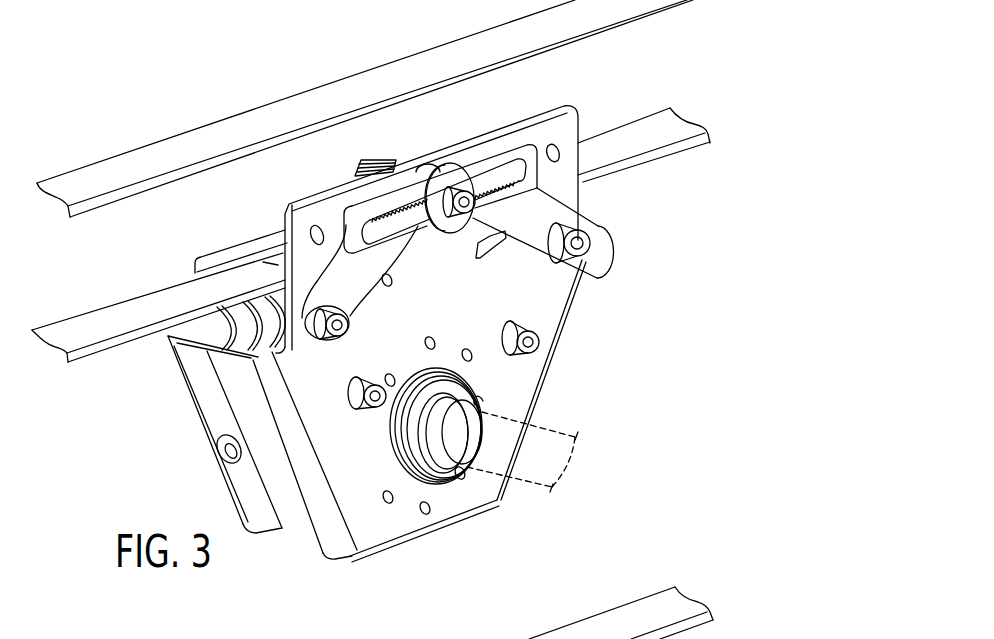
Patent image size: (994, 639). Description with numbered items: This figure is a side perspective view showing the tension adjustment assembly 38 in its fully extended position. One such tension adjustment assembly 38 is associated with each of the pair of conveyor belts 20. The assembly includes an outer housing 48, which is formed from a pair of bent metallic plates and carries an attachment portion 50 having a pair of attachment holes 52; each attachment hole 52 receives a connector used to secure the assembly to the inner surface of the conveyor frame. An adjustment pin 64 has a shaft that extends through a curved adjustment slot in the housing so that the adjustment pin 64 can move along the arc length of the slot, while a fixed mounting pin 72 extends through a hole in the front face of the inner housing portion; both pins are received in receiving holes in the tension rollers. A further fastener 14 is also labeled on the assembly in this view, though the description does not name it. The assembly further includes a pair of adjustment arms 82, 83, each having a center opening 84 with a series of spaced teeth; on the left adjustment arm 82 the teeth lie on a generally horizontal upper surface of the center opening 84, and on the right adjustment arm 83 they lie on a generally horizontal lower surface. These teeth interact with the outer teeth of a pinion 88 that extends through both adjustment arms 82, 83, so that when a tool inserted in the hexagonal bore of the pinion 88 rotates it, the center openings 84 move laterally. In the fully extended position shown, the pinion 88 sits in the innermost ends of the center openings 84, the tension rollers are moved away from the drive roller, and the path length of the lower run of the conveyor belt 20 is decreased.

The pivot fastener 14 is at (336, 338).
The conveyor belt 20 is at (133, 165).
The tension adjustment assembly 38 is at (577, 347).
The outer housing 48 is at (302, 532).
The attachment portion 50 is at (542, 134).
The attachment holes 52 is at (317, 222).
The adjustment pin 64 is at (585, 229).
The mounting pin 72 is at (527, 327).
The left adjustment arm 82 is at (419, 242).
The right adjustment arm 83 is at (532, 222).
The center opening 84 is at (486, 188).
The pinion 88 is at (378, 163).